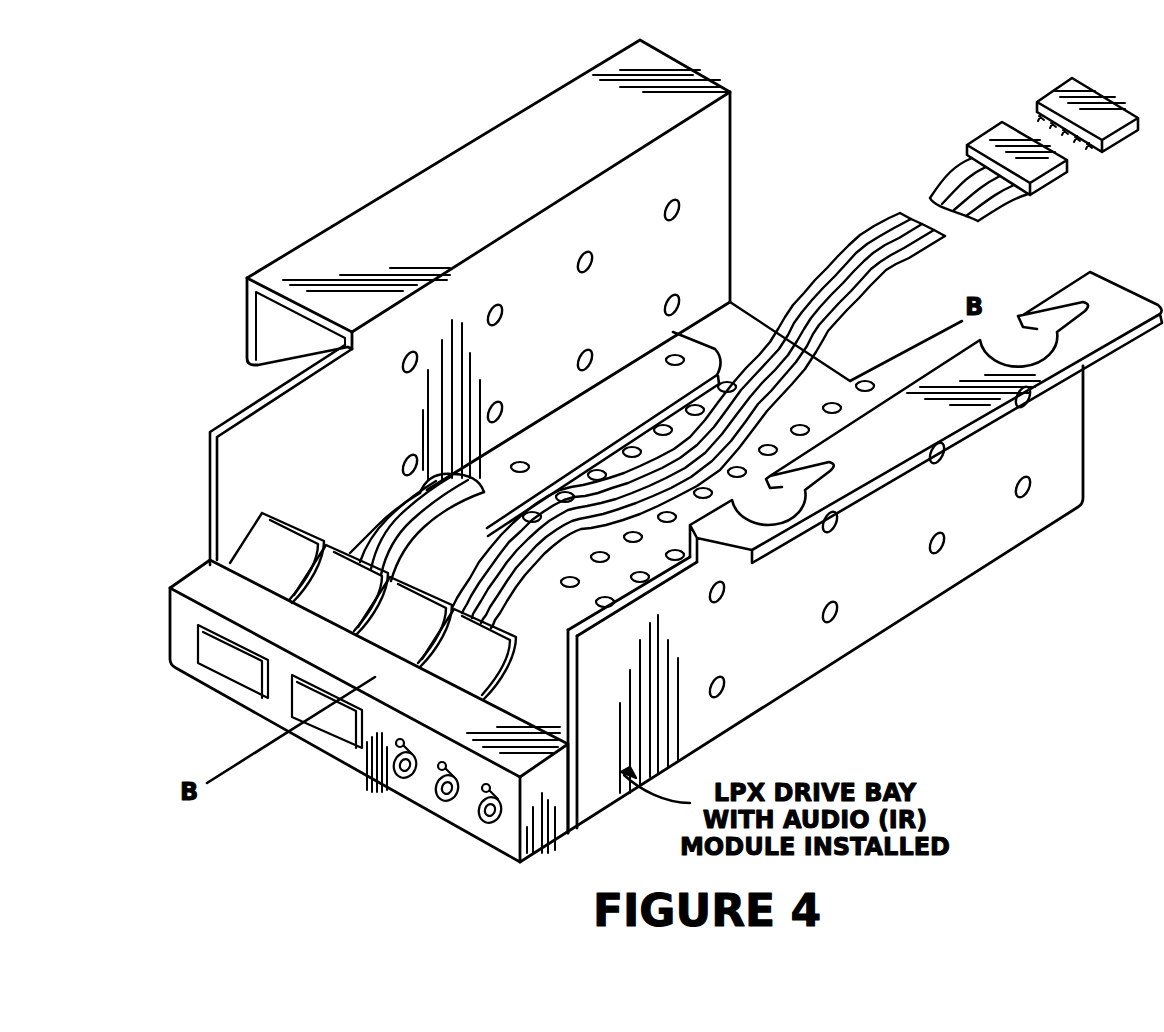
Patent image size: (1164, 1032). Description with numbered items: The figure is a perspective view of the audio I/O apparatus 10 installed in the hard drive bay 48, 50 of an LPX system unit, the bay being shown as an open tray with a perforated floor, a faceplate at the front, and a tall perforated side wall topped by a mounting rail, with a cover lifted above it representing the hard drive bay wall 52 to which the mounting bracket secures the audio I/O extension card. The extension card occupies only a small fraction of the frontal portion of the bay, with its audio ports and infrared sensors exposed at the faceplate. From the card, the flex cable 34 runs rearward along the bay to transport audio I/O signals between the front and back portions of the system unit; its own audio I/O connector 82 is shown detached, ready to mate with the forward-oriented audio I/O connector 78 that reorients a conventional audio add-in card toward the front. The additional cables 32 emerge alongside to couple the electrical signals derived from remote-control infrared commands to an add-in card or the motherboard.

The audio I/O apparatus 10 is at (386, 790).
The additional cables 32 is at (407, 510).
The flex cable 34 is at (873, 223).
The hard drive bay 48 is at (905, 587).
The hard drive bay 50 is at (710, 350).
The hard drive bay wall 52 is at (378, 450).
The audio I/O connector 78 is at (1052, 85).
The audio I/O connector 82 is at (987, 130).